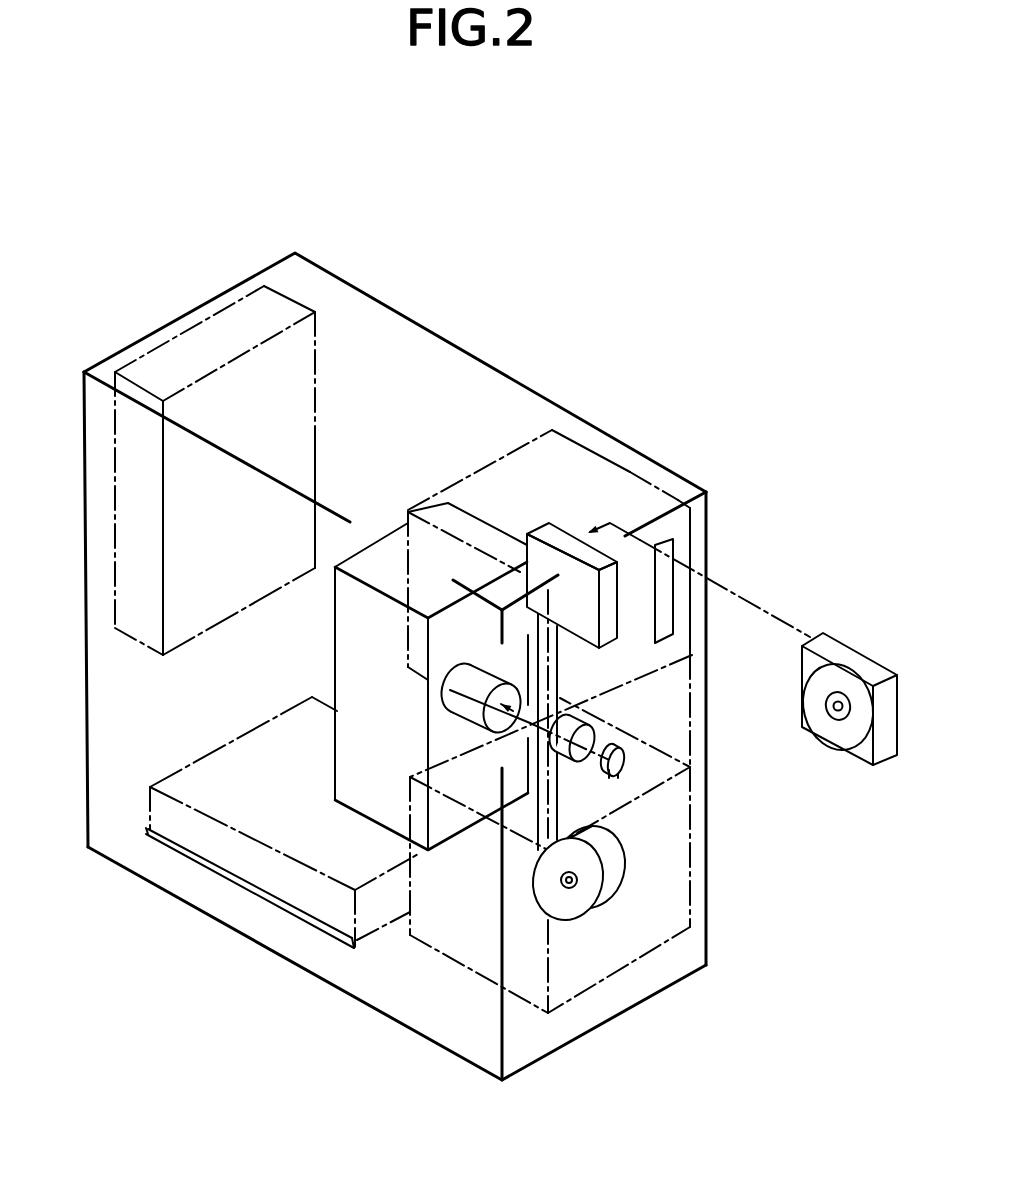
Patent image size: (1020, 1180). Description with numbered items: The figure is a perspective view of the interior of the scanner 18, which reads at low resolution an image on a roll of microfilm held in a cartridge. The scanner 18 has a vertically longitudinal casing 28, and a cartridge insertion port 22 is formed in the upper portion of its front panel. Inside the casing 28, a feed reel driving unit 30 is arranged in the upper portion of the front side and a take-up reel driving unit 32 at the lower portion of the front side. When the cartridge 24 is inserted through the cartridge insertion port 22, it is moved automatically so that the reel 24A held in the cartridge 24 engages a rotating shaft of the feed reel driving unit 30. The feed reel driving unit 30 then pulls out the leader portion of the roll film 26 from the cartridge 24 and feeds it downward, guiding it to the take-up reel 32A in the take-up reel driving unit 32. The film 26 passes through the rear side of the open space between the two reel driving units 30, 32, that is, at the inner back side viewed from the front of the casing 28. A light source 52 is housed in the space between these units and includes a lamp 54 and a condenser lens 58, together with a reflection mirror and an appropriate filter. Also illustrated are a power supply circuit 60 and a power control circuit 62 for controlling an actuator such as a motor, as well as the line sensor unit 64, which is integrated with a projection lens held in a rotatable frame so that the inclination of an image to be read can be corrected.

The scanner 18 is at (458, 336).
The cartridge insertion port 22 is at (667, 552).
The cartridge 24 is at (870, 657).
The reel 24A is at (845, 735).
The roll film 26 is at (540, 817).
The casing 28 is at (318, 263).
The feed reel driving unit 30 is at (593, 452).
The take-up reel driving unit 32 is at (712, 930).
The take-up reel 32A is at (587, 905).
The light source 52 is at (636, 753).
The lamp 54 is at (620, 765).
The condenser lens 58 is at (560, 720).
The power supply circuit 60 is at (322, 352).
The power control circuit 62 is at (148, 820).
The line sensor unit 64 is at (470, 508).